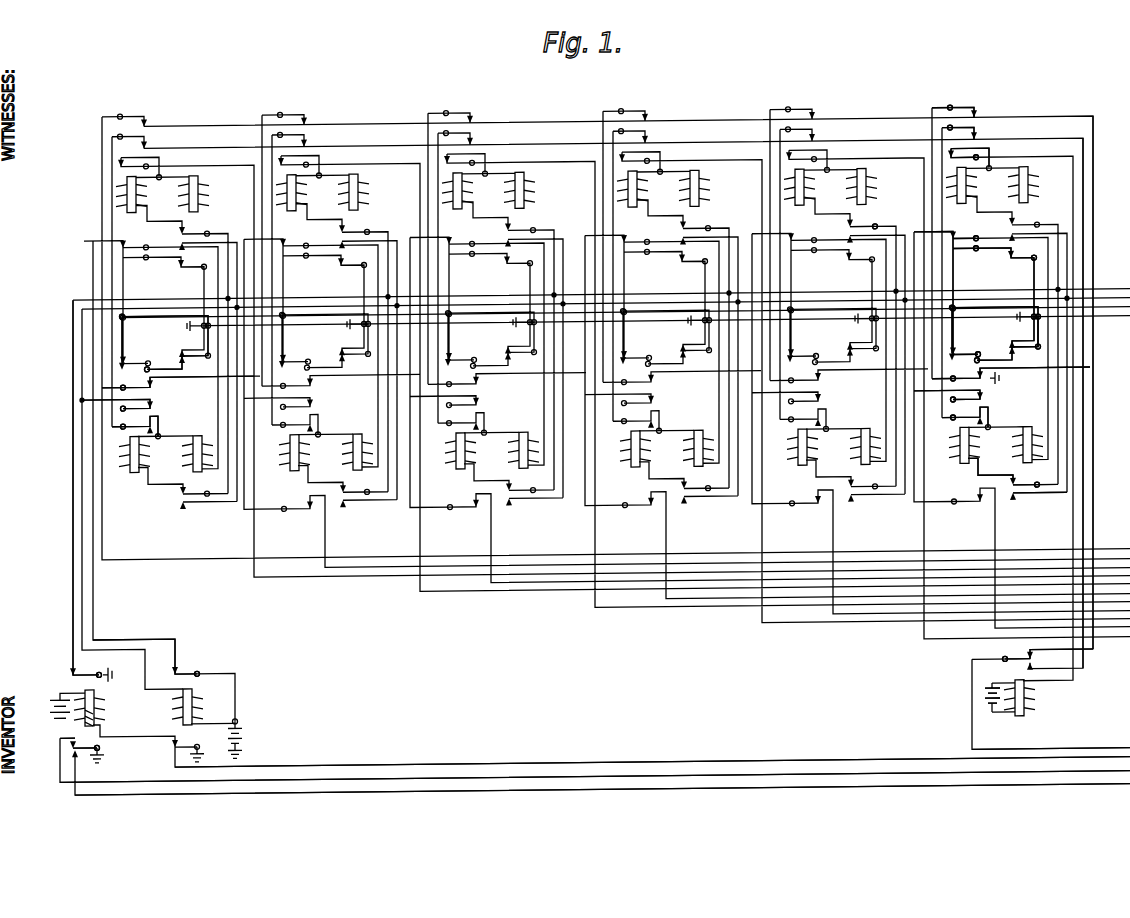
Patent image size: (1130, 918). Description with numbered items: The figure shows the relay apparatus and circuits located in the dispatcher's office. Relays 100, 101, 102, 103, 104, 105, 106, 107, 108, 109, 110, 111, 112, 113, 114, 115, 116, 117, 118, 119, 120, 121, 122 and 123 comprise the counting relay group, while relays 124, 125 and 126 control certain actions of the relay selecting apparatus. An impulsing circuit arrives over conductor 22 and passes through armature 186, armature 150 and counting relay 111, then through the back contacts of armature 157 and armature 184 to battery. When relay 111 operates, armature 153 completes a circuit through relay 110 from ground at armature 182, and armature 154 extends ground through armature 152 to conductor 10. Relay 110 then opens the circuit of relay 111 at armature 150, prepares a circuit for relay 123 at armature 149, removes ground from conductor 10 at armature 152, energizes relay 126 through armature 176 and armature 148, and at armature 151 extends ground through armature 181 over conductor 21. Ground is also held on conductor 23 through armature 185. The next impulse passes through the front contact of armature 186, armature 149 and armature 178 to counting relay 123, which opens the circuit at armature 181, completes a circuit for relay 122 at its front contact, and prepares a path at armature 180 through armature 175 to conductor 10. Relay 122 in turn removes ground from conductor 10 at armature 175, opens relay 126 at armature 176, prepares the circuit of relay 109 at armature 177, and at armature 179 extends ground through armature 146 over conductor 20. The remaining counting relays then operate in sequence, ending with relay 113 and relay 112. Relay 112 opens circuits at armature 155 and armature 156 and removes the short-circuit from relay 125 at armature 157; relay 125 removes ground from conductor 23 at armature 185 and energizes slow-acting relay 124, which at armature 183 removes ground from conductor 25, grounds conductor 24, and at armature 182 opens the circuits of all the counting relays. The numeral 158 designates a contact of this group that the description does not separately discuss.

The conductor 10 is at (1108, 318).
The conductor 20 is at (1117, 659).
The conductor 21 is at (1100, 408).
The conductor 22 is at (652, 746).
The conductor 23 is at (1076, 759).
The conductor 24 is at (1078, 783).
The conductor 25 is at (1122, 796).
The counting relay 100 is at (138, 195).
The counting relay 101 is at (200, 195).
The counting relay 102 is at (298, 195).
The counting relay 103 is at (360, 195).
The counting relay 104 is at (464, 195).
The counting relay 105 is at (526, 195).
The counting relay 106 is at (632, 189).
The counting relay 107 is at (701, 195).
The counting relay 108 is at (806, 195).
The counting relay 109 is at (868, 195).
The counting relay 110 is at (968, 195).
The counting relay 111 is at (1030, 195).
The counting relay 112 is at (123, 454).
The counting relay 113 is at (182, 455).
The counting relay 114 is at (283, 453).
The counting relay 115 is at (342, 455).
The counting relay 116 is at (449, 451).
The counting relay 117 is at (508, 455).
The counting relay 118 is at (624, 449).
The counting relay 119 is at (683, 455).
The counting relay 120 is at (791, 447).
The counting relay 121 is at (850, 455).
The counting relay 122 is at (976, 462).
The counting relay 123 is at (1012, 455).
The slow-acting relay 124 is at (95, 718).
The relay 125 is at (198, 716).
The relay 126 is at (1013, 691).
The armature 146 is at (852, 240).
The armature 148 is at (958, 119).
The armature 149 is at (977, 134).
The armature 150 is at (982, 166).
The armature 151 is at (947, 234).
The armature 152 is at (966, 301).
The armature 153 is at (1020, 266).
The armature 154 is at (1014, 290).
The armature 155 is at (128, 369).
The armature 156 is at (143, 388).
The armature 157 is at (150, 404).
The contact 158 is at (160, 424).
The armature 175 is at (958, 370).
The armature 176 is at (984, 396).
The armature 177 is at (985, 411).
The armature 178 is at (978, 432).
The armature 179 is at (976, 518).
The armature 180 is at (1018, 357).
The armature 181 is at (1028, 507).
The armature 182 is at (89, 489).
The armature 183 is at (85, 755).
The armature 184 is at (183, 668).
The armature 185 is at (240, 738).
The armature 186 is at (1003, 668).